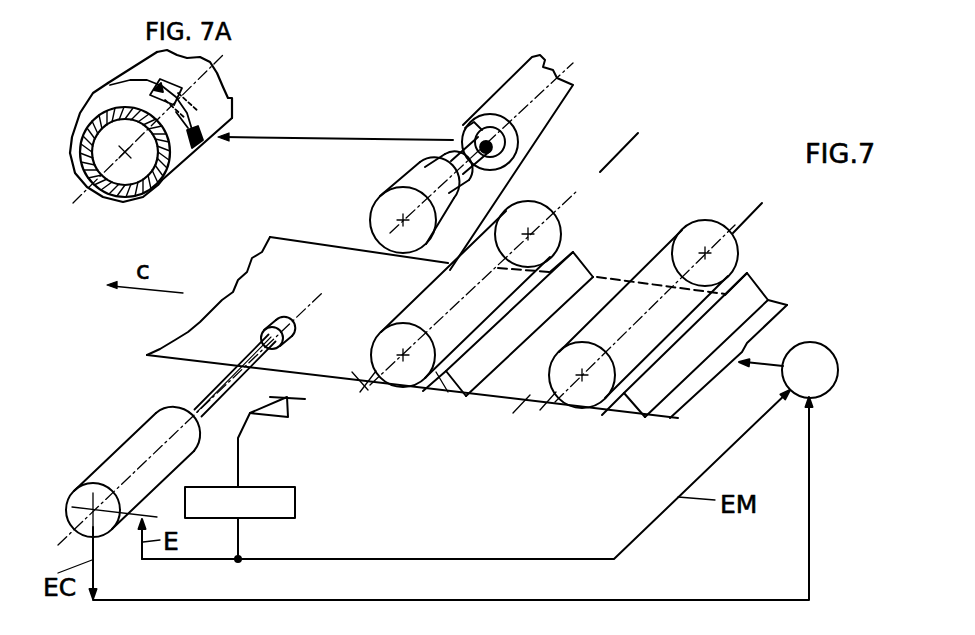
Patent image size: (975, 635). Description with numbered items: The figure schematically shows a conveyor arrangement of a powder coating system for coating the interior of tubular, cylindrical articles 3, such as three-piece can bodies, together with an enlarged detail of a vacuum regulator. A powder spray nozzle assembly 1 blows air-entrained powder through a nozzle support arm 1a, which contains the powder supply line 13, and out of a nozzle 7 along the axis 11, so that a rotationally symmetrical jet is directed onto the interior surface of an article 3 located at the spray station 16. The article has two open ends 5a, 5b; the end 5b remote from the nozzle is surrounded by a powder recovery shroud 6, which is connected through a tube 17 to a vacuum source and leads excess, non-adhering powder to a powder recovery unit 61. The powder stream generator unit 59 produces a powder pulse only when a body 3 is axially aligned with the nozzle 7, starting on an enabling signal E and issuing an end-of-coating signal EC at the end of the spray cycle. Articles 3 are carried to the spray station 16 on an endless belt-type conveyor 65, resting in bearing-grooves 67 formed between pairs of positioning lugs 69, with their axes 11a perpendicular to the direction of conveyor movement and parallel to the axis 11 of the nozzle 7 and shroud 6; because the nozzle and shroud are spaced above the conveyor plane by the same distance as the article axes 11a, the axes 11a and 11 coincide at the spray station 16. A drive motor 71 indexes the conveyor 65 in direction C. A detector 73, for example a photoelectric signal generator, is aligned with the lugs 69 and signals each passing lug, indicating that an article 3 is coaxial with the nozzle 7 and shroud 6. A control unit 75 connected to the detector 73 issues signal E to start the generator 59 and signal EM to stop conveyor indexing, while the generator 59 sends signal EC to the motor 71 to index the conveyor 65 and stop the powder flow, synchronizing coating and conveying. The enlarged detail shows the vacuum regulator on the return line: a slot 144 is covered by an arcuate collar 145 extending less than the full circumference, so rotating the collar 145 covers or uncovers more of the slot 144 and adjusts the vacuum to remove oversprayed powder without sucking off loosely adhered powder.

In FIG. 7, the powder spray nozzle assembly 1 is at (242, 350).
In FIG. 7, the nozzle support arm 1a is at (223, 385).
In FIG. 7, the target article 3 is at (548, 235).
In FIG. 7, the open end 5a is at (412, 388).
In FIG. 7, the open end 5b is at (528, 232).
In FIG. 7, the powder recovery shroud 6 is at (375, 203).
In FIG. 7, the nozzle 7 is at (275, 326).
In FIG. 7, the axis 11 is at (207, 407).
In FIG. 7, the axes of the tubular articles 11a is at (625, 150).
In FIG. 7, the air-entrained powder supply line 13 is at (242, 360).
In FIG. 7, the spray station 16 is at (306, 271).
In FIG. 7A, the tube 17 is at (219, 98).
In FIG. 7, the tube 17 is at (457, 145).
In FIG. 7, the powder stream generator unit 59 is at (137, 452).
In FIG. 7, the powder recovery unit 61 is at (563, 93).
In FIG. 7, the endless belt-type conveyor 65 is at (767, 308).
In FIG. 7, the bearing-grooves 67 is at (578, 408).
In FIG. 7, the positioning lugs 69 is at (513, 413).
In FIG. 7, the drive motor 71 is at (826, 362).
In FIG. 7, the detector 73 is at (288, 418).
In FIG. 7, the control unit 75 is at (296, 508).
In FIG. 7A, the slot 144 is at (193, 150).
In FIG. 7, the slot 144 is at (505, 150).
In FIG. 7A, the arcuate collar 145 is at (128, 85).
In FIG. 7, the arcuate collar 145 is at (467, 127).